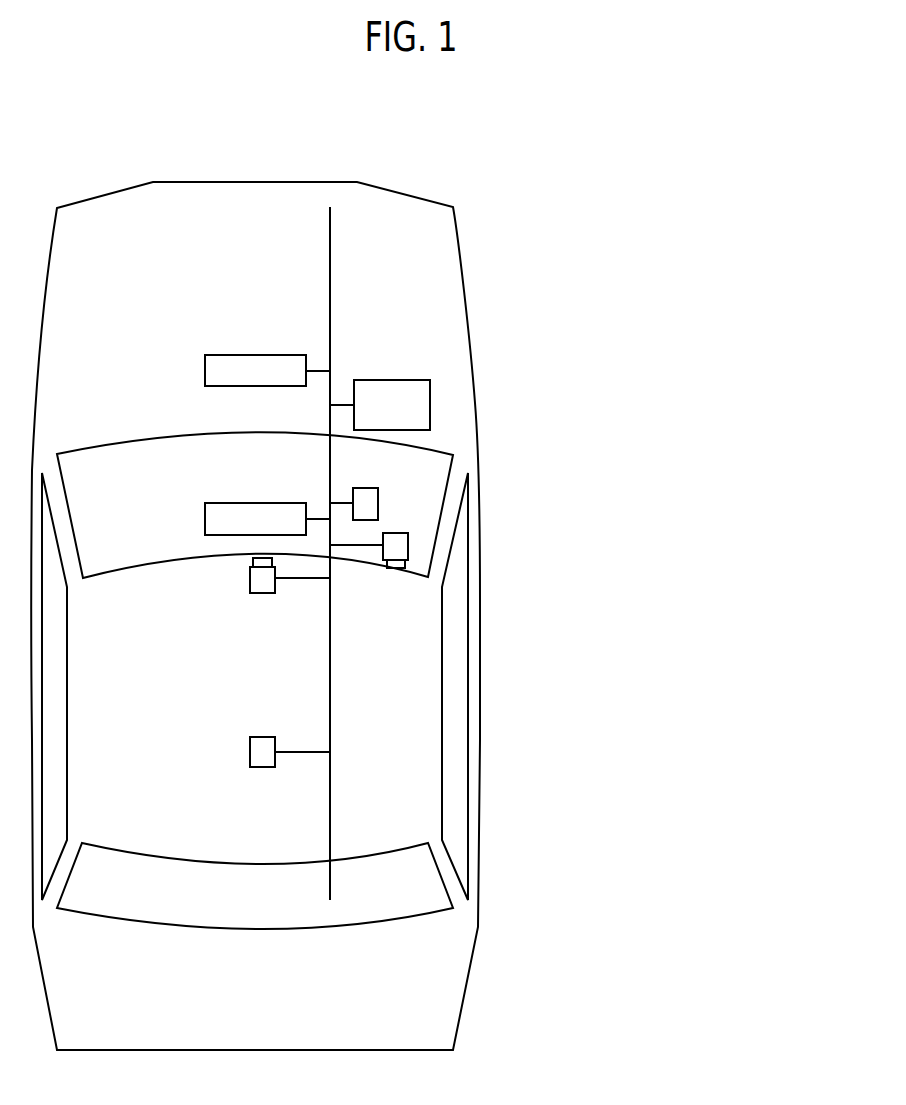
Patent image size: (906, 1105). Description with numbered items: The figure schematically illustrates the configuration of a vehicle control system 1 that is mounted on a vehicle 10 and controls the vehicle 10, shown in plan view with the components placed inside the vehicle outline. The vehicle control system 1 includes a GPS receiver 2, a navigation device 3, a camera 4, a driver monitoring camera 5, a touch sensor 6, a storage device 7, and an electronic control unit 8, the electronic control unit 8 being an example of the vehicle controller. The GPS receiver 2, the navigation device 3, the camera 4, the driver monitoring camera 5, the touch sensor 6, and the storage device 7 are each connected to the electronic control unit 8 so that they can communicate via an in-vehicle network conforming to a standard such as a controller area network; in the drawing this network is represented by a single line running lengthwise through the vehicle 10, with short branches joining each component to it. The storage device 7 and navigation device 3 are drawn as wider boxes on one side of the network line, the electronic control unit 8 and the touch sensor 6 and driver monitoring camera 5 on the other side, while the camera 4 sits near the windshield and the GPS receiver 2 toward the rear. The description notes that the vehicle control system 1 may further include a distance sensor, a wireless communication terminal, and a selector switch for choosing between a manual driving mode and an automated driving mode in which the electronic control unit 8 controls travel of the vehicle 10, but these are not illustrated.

The vehicle control system 1 is at (721, 929).
The vehicle 10 is at (478, 895).
The GPS receiver 2 is at (257, 768).
The navigation device 3 is at (205, 518).
The camera 4 is at (255, 596).
The driver monitoring camera 5 is at (408, 547).
The touch sensor 6 is at (378, 500).
The storage device 7 is at (205, 371).
The electronic control unit 8 is at (430, 407).